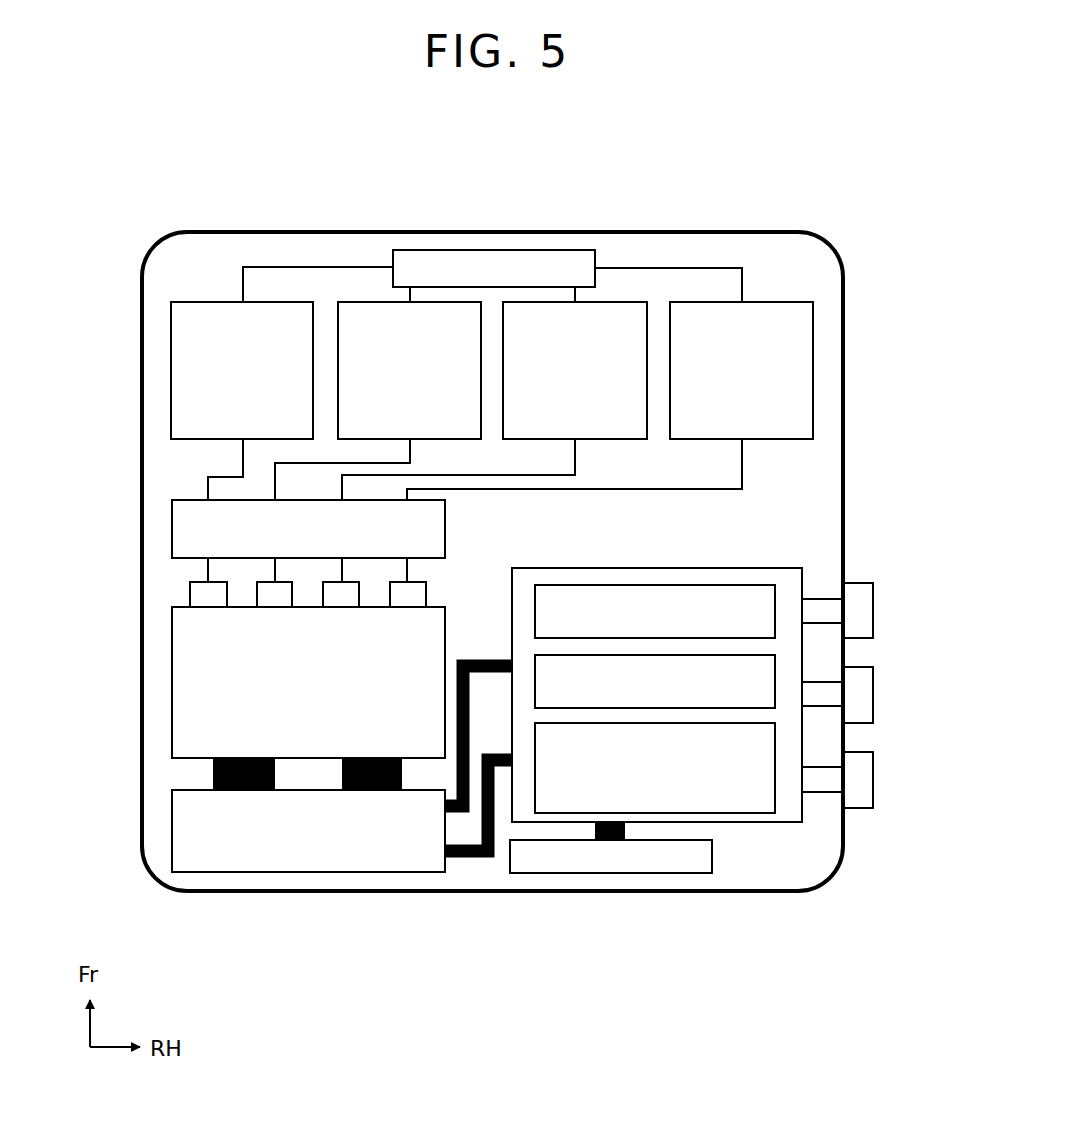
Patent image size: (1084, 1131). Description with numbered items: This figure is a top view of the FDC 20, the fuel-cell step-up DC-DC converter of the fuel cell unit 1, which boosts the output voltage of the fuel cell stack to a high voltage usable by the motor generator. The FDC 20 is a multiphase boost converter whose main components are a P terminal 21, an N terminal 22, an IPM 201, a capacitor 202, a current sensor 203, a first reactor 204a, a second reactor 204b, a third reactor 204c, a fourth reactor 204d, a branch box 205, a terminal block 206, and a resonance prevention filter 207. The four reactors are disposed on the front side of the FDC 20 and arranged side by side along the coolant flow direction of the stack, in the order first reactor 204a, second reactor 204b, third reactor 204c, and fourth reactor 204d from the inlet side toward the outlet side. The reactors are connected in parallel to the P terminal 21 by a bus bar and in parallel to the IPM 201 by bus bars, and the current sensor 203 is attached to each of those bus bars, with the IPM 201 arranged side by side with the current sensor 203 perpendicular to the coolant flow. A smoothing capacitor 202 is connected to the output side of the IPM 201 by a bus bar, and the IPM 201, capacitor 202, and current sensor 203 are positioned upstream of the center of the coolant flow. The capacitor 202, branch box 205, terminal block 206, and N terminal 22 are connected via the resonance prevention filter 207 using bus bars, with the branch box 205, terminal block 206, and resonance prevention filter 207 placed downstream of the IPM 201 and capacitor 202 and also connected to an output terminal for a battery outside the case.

The fuel cell unit 1 is at (838, 204).
The FDC 20 is at (166, 288).
The P terminal 21 is at (478, 250).
The N terminal 22 is at (608, 874).
The IPM 201 is at (172, 671).
The capacitor 202 is at (172, 826).
The current sensor 203 is at (172, 527).
The first reactor 204a is at (198, 300).
The second reactor 204b is at (357, 300).
The third reactor 204c is at (610, 300).
The fourth reactor 204d is at (763, 300).
The branch box 205 is at (777, 590).
The terminal block 206 is at (777, 662).
The resonance prevention filter 207 is at (742, 818).